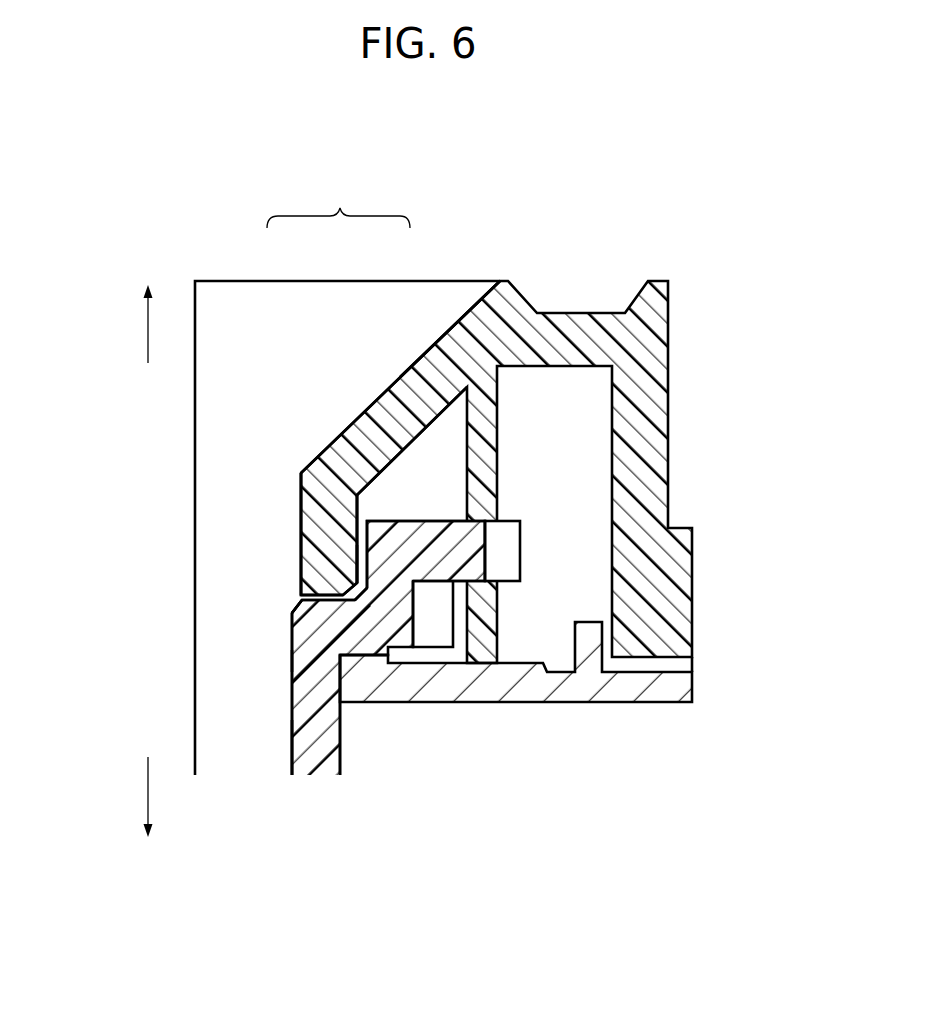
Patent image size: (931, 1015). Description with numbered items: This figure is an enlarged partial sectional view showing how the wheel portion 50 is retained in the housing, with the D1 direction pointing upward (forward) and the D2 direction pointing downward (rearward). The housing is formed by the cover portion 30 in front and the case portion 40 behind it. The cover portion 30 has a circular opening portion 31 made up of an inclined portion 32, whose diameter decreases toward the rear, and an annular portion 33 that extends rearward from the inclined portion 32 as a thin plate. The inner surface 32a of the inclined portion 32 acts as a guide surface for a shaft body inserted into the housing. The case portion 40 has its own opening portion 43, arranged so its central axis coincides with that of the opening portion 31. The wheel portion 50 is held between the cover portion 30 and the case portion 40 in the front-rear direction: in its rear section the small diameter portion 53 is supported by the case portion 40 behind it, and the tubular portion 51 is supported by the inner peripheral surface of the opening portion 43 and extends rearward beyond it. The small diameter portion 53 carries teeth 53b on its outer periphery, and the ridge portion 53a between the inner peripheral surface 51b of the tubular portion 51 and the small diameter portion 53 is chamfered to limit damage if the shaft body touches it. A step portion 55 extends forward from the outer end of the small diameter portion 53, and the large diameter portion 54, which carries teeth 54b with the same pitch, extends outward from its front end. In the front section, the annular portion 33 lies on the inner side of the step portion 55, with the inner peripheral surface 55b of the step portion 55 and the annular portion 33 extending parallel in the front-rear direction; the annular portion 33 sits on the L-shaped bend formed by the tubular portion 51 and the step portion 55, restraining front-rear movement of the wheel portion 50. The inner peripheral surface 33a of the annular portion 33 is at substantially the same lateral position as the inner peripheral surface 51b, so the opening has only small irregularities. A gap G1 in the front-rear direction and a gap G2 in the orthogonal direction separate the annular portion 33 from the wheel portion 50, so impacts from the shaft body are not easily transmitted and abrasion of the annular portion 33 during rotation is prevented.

The cover portion 30 is at (683, 348).
The opening portion 31 is at (338, 202).
The inclined portion 32 is at (390, 395).
The inner surface 32a is at (483, 318).
The annular portion 33 is at (301, 473).
The inner peripheral surface 33a is at (301, 517).
The case portion 40 is at (673, 683).
The opening portion 43 is at (305, 662).
The wheel portion 50 is at (240, 722).
The tubular portion 51 is at (308, 693).
The inner peripheral surface 51b is at (290, 750).
The small diameter portion 53 is at (315, 626).
The ridge portion 53a is at (293, 604).
The teeth 53b is at (415, 622).
The large diameter portion 54 is at (455, 540).
The teeth 54b is at (487, 543).
The step portion 55 is at (372, 592).
The inner peripheral surface 55b is at (357, 560).
The gap G1 is at (293, 593).
The gap G2 is at (364, 514).
The D1 direction D1 is at (146, 306).
The D2 direction D2 is at (147, 814).